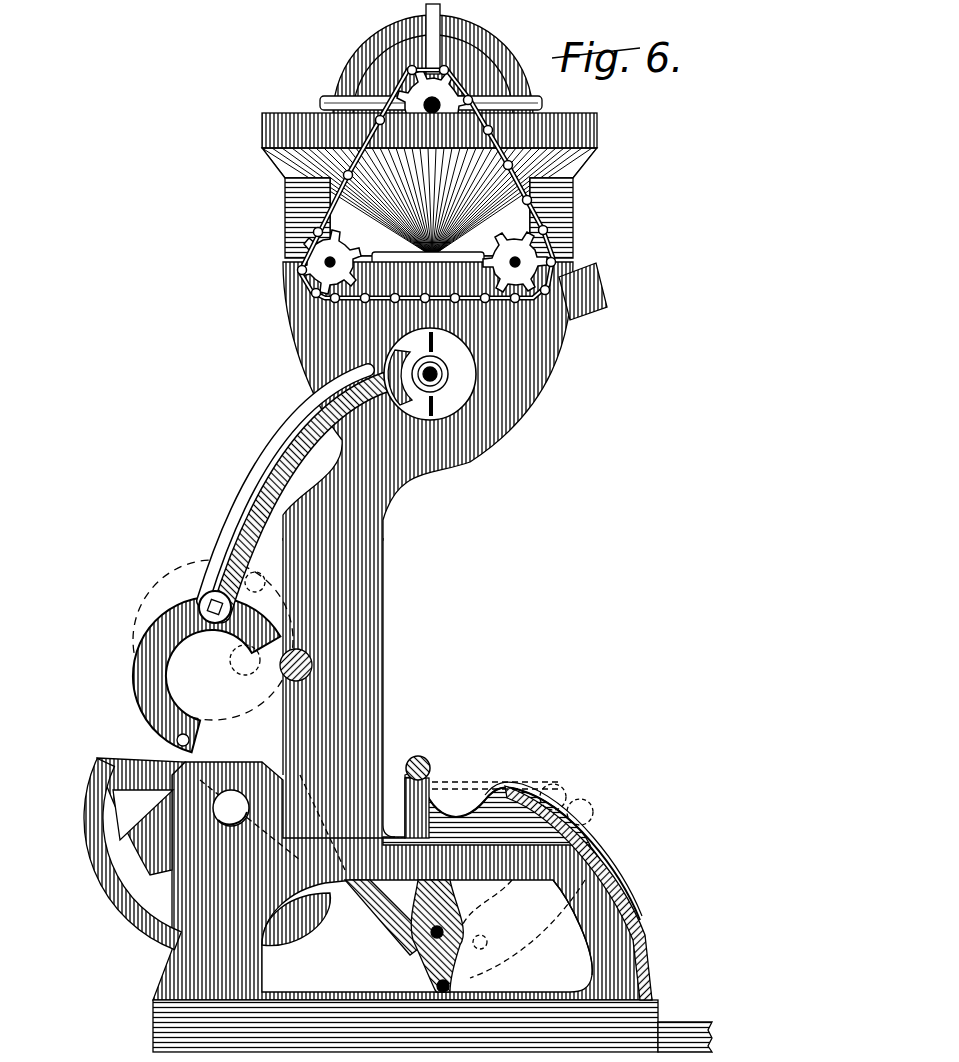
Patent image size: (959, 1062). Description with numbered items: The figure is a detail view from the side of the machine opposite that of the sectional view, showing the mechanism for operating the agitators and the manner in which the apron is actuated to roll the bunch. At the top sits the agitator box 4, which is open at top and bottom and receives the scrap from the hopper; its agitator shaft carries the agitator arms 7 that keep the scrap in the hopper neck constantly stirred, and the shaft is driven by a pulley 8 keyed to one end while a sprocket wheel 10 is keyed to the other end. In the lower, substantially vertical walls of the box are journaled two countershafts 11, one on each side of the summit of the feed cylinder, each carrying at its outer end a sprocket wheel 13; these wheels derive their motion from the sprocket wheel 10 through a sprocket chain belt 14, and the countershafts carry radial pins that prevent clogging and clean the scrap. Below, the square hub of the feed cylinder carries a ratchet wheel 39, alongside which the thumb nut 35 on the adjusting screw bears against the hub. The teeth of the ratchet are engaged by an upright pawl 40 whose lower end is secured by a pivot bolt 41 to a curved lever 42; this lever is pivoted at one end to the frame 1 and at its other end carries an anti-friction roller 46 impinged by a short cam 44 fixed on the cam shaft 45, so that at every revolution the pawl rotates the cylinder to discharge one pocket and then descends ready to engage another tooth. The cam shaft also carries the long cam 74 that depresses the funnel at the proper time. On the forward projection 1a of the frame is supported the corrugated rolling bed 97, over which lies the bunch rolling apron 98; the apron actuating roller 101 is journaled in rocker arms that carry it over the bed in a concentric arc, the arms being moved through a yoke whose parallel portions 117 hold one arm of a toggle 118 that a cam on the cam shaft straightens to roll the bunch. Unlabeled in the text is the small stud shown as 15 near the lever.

The frame 1 is at (368, 543).
The forward projection of the frame 1a is at (620, 963).
The agitator box 4 is at (290, 214).
The agitator arms 7 is at (328, 98).
The pulley 8 is at (492, 52).
The sprocket wheel 10 is at (416, 142).
The countershafts 11 is at (326, 265).
The sprocket wheels 13 is at (423, 261).
The sprocket chain belt 14 is at (418, 181).
The stud 15 is at (310, 672).
The thumb nut 35 is at (430, 412).
The ratchet wheel 39 is at (462, 398).
The upright pawl 40 is at (263, 490).
The pivot bolt 41 is at (205, 612).
The curved lever 42 is at (138, 713).
The cam 44 is at (117, 820).
The cam shaft 45 is at (266, 818).
The anti-friction roller 46 is at (160, 750).
The long cam 74 is at (125, 916).
The rolling bed 97 is at (632, 885).
The bunch rolling apron 98 is at (518, 796).
The apron actuating roller 101 is at (432, 757).
The parallel portions of the yoke 117 is at (427, 947).
The toggle 118 is at (390, 903).